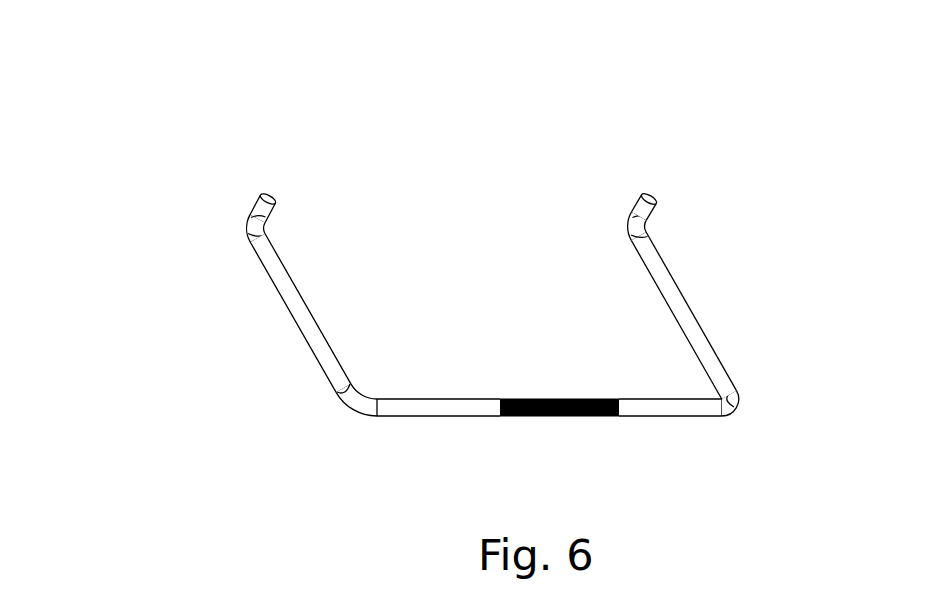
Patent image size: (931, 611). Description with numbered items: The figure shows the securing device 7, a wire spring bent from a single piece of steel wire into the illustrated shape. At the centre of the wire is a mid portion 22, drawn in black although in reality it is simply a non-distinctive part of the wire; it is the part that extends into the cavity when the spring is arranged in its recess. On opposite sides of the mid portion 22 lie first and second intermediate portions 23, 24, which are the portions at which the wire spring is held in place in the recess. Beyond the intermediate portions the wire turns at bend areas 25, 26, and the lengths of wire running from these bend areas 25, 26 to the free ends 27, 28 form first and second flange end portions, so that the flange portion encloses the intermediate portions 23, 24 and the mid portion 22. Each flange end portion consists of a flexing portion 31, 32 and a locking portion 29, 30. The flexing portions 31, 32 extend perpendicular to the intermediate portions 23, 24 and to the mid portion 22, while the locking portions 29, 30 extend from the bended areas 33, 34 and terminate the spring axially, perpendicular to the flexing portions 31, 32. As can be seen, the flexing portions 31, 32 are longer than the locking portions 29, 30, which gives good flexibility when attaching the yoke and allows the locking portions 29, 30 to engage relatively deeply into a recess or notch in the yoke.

The securing device 7 is at (126, 75).
The mid portion 22 is at (548, 417).
The first intermediate portion 23 is at (437, 409).
The second intermediate portion 24 is at (678, 409).
The bend area 25 is at (347, 393).
The bend area 26 is at (733, 398).
The free end 27 is at (265, 194).
The free end 28 is at (648, 194).
The locking portion 29 is at (252, 205).
The locking portion 30 is at (635, 203).
The flexing portion 31 is at (291, 305).
The flexing portion 32 is at (668, 292).
The bended area 33 is at (246, 222).
The bended area 34 is at (628, 222).